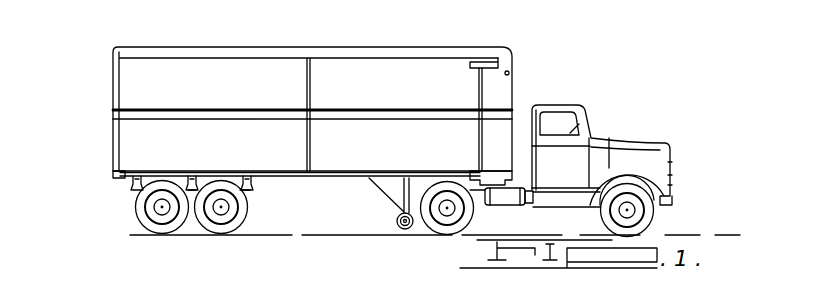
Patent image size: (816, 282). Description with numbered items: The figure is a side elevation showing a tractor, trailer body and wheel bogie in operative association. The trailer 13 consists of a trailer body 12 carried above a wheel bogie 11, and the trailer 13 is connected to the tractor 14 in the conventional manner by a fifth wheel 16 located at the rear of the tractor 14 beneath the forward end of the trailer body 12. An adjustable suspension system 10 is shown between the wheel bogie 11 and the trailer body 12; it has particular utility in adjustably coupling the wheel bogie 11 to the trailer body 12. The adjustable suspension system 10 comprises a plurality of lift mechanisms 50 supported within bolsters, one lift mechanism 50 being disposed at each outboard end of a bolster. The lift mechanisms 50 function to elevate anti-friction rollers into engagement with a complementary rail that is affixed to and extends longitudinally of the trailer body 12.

The adjustable suspension system 10 is at (273, 190).
The wheel bogie 11 is at (130, 187).
The trailer body 12 is at (363, 79).
The trailer 13 is at (295, 125).
The tractor 14 is at (639, 140).
The fifth wheel 16 is at (471, 180).
The lift mechanism 50 is at (198, 171).